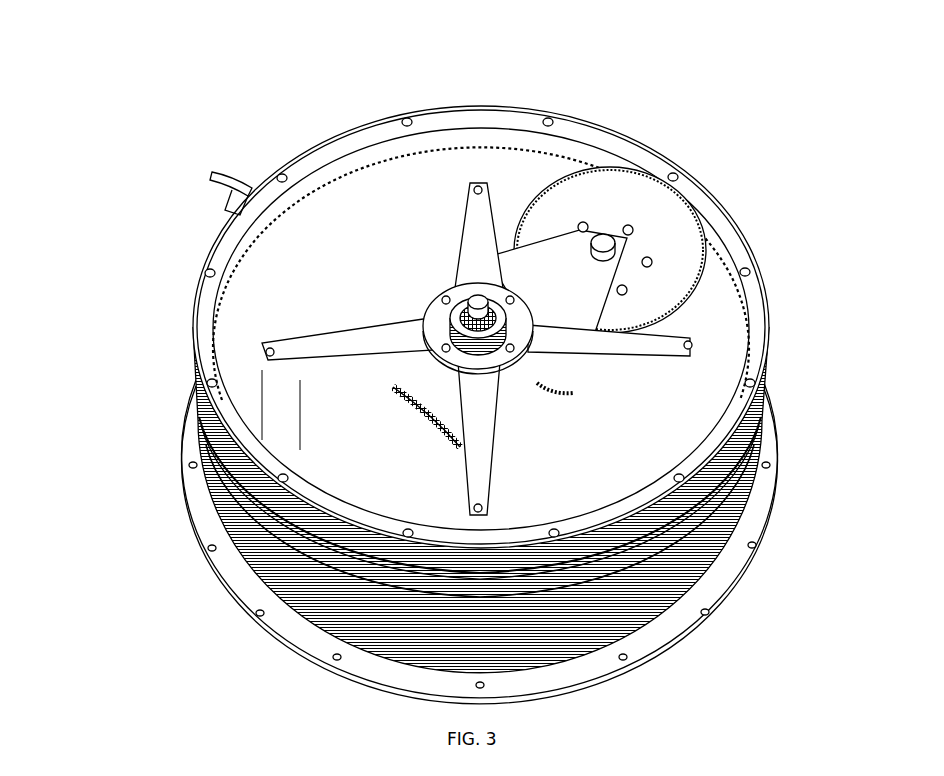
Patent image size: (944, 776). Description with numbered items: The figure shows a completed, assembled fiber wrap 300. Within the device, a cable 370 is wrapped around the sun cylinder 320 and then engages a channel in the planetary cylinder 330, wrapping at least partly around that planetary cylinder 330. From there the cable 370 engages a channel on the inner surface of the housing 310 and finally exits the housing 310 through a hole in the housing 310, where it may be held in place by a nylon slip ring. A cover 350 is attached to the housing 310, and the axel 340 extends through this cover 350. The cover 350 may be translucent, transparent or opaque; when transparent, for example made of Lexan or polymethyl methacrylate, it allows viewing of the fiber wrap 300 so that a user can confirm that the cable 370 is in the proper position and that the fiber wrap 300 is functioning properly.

The fiber wrap 300 is at (150, 145).
The housing 310 is at (245, 532).
The sun cylinder 320 is at (545, 393).
The planetary cylinder 330 is at (660, 238).
The axel 340 is at (478, 300).
The cover 350 is at (278, 192).
The cable 370 is at (370, 408).